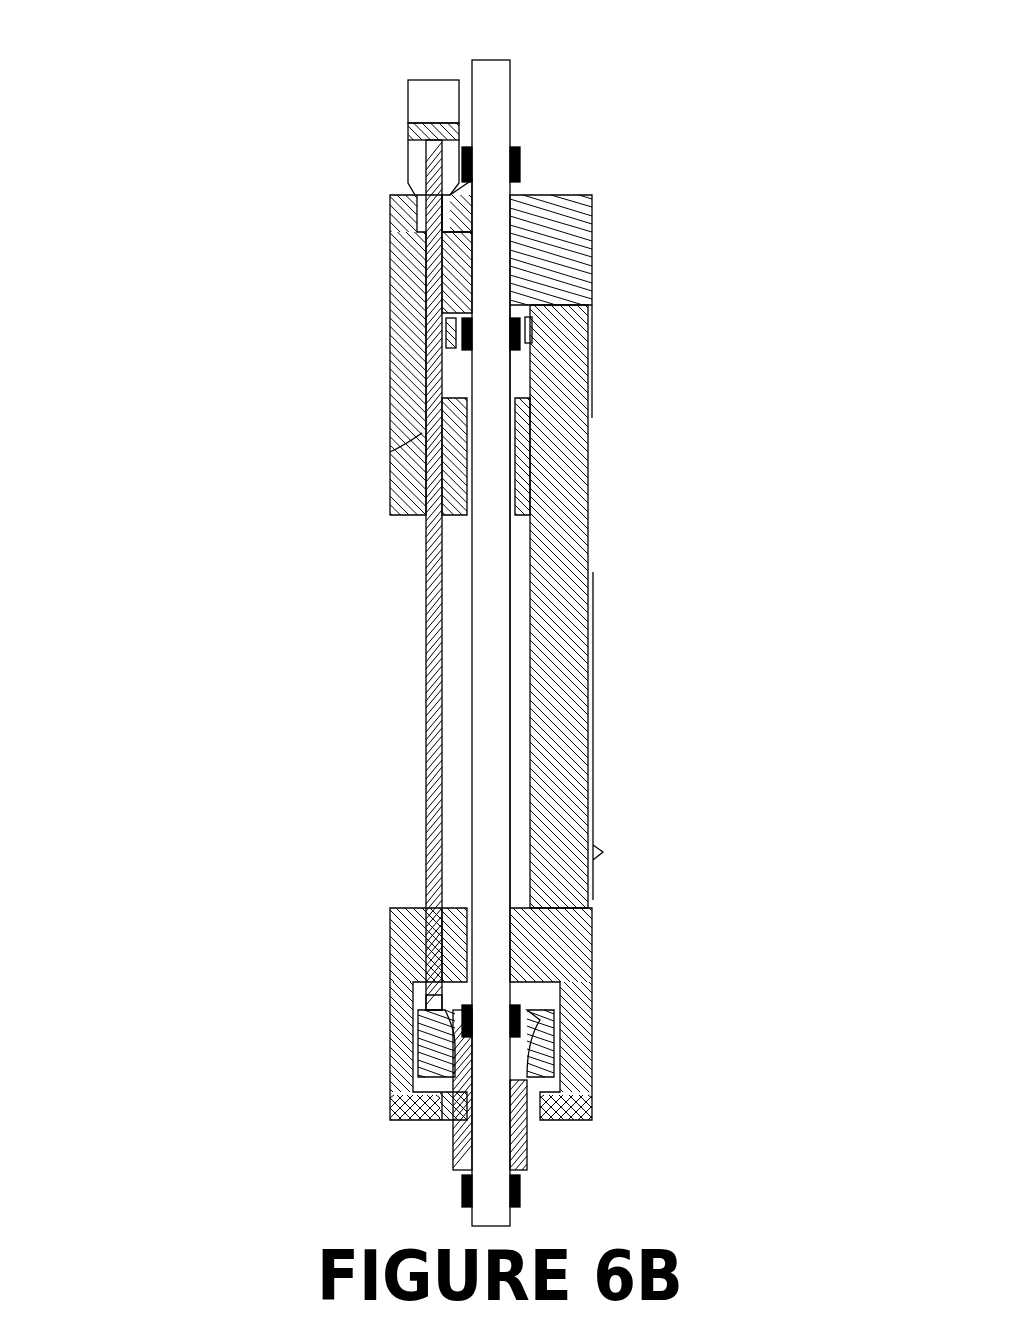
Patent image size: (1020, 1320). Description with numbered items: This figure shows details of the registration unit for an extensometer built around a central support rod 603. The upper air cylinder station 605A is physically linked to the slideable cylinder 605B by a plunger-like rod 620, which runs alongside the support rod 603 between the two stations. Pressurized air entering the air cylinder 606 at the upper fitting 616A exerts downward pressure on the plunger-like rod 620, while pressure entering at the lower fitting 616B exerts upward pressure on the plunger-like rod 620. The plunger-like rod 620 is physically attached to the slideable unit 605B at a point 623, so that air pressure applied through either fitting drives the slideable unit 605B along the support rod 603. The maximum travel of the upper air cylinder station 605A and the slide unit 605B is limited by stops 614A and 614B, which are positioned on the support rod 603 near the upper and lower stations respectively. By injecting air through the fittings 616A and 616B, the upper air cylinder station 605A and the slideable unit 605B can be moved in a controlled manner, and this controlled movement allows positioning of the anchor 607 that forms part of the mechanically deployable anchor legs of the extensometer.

The support rod 603 is at (512, 73).
The air cylinder 606 is at (341, 116).
The upper fitting 616A is at (408, 112).
The lower fitting 616B is at (410, 185).
The plunger-like rod 620 is at (426, 715).
The anchor 607 is at (400, 515).
The stop 614A is at (465, 345).
The stop 614B is at (458, 1038).
The attachment point 623 is at (425, 1005).
The upper air cylinder station 605A is at (578, 197).
The slideable cylinder 605B is at (545, 1015).